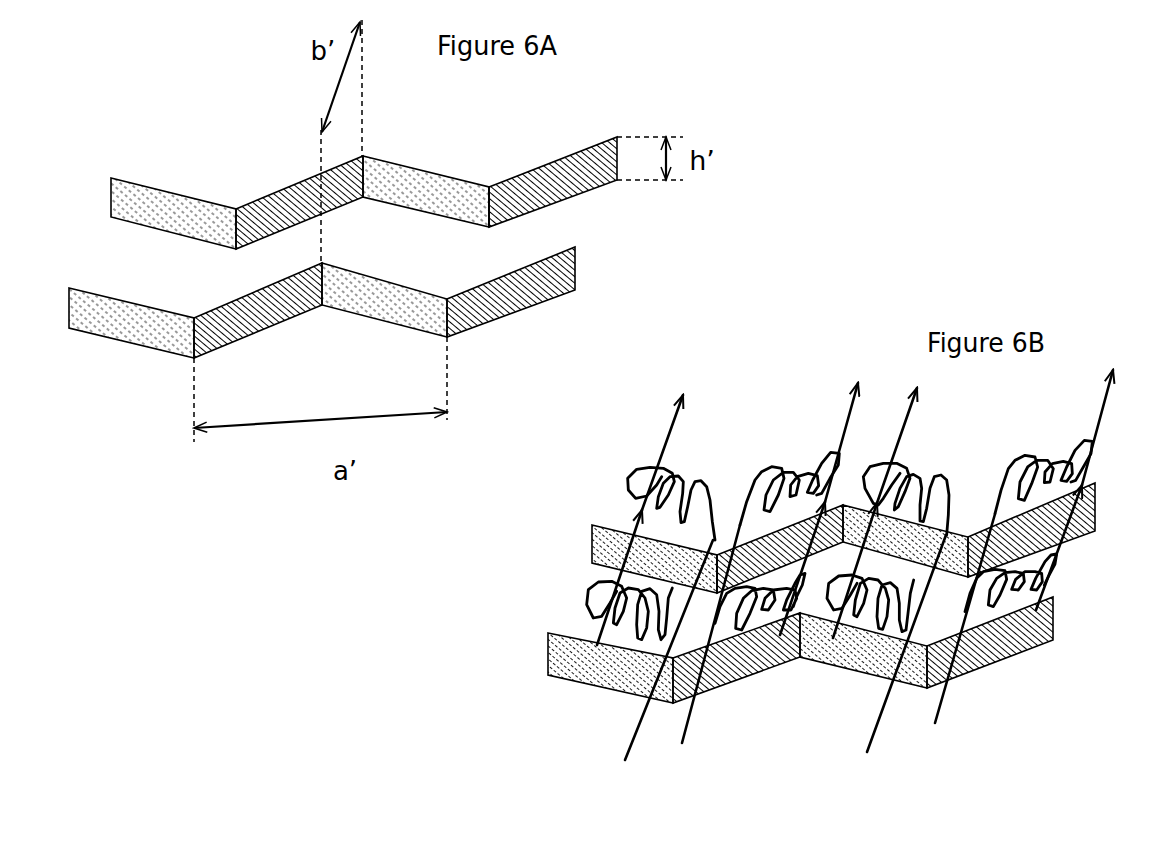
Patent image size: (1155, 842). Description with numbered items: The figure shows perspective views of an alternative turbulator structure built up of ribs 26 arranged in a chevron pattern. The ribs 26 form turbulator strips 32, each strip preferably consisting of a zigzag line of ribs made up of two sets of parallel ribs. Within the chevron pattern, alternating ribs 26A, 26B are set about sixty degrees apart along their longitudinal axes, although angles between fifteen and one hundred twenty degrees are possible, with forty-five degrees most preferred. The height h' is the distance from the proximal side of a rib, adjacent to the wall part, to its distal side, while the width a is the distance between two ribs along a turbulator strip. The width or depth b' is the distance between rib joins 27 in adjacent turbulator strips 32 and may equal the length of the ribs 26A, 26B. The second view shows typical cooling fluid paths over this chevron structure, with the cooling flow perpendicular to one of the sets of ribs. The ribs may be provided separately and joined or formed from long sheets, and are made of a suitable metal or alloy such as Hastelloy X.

In FIG. 6A, the ribs 26 is at (418, 182).
In FIG. 6B, the ribs 26 is at (605, 542).
In FIG. 6A, the rib 26A is at (515, 295).
In FIG. 6A, the rib 26B is at (375, 310).
In FIG. 6A, the rib joins 27 is at (490, 188).
In FIG. 6B, the rib joins 27 is at (718, 553).
In FIG. 6A, the turbulator strips 32 is at (422, 229).
In FIG. 6B, the turbulator strips 32 is at (732, 545).